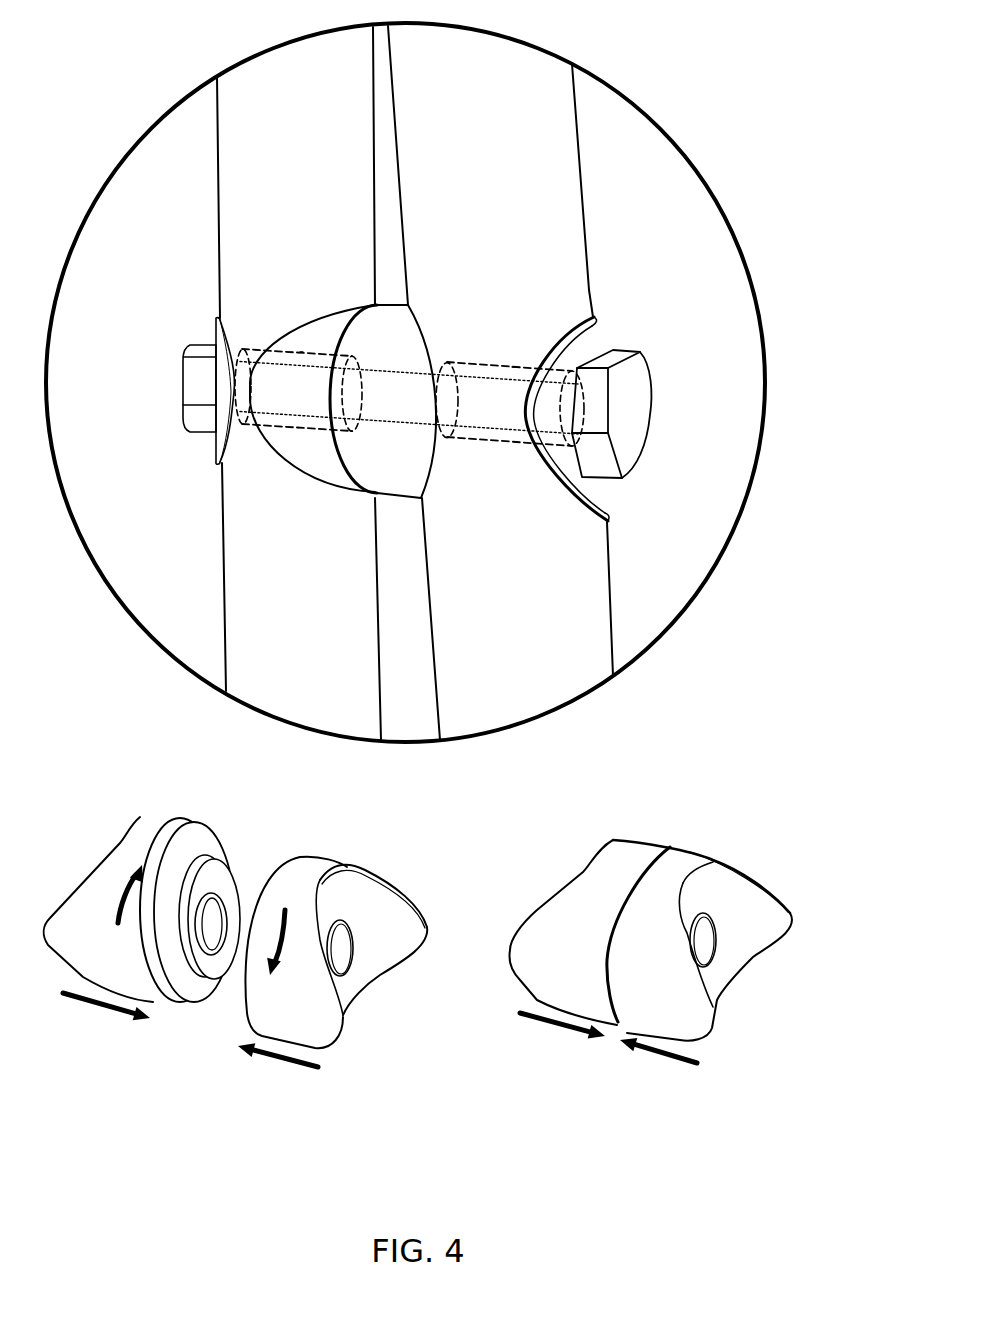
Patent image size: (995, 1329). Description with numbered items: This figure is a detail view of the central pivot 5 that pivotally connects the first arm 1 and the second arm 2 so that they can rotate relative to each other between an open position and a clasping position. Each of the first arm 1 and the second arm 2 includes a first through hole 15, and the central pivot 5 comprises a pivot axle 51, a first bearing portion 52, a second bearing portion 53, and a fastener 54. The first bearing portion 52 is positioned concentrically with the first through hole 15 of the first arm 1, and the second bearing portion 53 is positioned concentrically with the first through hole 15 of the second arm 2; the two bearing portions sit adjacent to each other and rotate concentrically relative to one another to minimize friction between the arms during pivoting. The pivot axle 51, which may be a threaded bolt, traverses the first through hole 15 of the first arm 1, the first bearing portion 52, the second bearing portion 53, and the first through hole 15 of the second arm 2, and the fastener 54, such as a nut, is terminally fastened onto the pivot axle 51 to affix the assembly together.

The first arm 1 is at (570, 229).
The second arm 2 is at (245, 253).
The central pivot 5 is at (449, 626).
The first through hole 15 is at (303, 352).
The pivot axle 51 is at (400, 413).
The first bearing portion 52 is at (381, 349).
The second bearing portion 53 is at (325, 459).
The fastener 54 is at (195, 379).